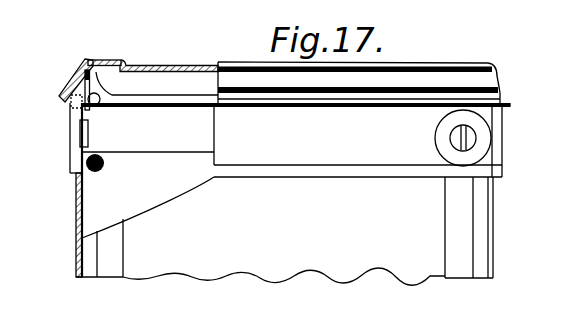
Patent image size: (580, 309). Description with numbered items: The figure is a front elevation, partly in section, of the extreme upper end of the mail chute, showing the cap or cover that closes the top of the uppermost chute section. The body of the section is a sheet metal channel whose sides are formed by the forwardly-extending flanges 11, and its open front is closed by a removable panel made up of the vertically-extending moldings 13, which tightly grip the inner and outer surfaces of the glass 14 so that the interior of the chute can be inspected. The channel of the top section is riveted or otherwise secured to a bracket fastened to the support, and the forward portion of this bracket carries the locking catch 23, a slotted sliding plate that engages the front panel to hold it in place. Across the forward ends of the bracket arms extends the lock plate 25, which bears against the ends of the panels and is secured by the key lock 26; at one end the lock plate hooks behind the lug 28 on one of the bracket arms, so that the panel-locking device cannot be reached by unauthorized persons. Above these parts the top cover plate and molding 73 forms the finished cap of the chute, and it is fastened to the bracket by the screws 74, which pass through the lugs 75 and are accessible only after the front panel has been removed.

The forwardly-extending flange 11 is at (80, 200).
The vertically-extending molding 13 is at (457, 248).
The glass 14 is at (284, 257).
The locking catch plate 23 is at (142, 190).
The lock plate 25 is at (358, 142).
The key lock 26 is at (458, 140).
The lug 28 is at (80, 130).
The top cover plate and molding 73 is at (497, 79).
The screw 74 is at (99, 105).
The lug 75 is at (91, 81).